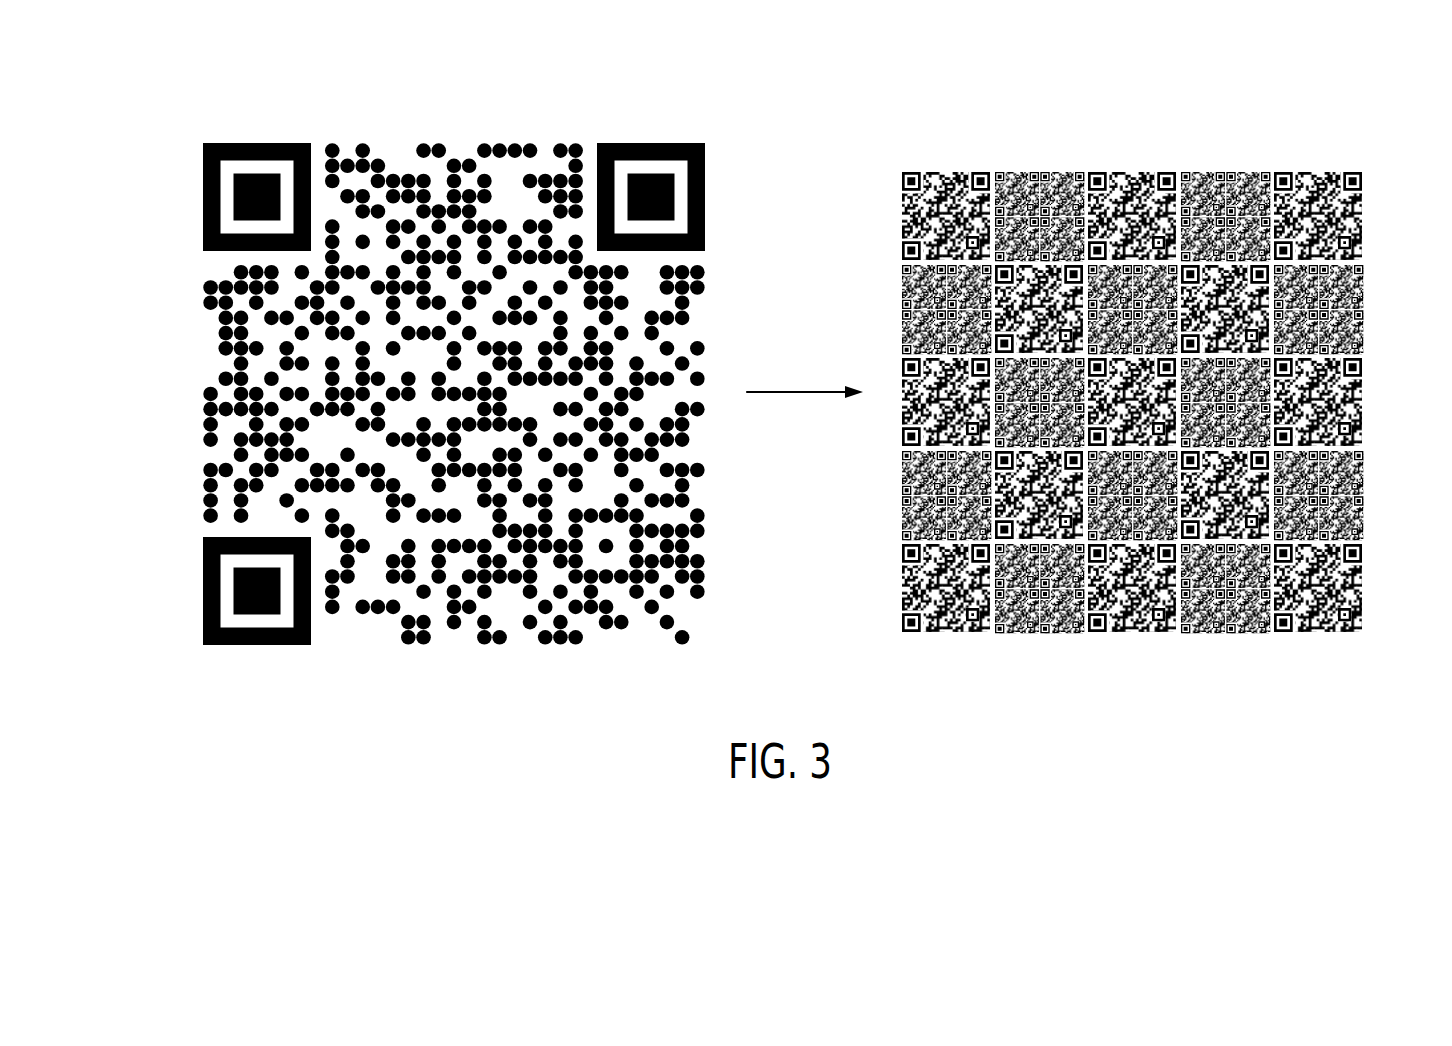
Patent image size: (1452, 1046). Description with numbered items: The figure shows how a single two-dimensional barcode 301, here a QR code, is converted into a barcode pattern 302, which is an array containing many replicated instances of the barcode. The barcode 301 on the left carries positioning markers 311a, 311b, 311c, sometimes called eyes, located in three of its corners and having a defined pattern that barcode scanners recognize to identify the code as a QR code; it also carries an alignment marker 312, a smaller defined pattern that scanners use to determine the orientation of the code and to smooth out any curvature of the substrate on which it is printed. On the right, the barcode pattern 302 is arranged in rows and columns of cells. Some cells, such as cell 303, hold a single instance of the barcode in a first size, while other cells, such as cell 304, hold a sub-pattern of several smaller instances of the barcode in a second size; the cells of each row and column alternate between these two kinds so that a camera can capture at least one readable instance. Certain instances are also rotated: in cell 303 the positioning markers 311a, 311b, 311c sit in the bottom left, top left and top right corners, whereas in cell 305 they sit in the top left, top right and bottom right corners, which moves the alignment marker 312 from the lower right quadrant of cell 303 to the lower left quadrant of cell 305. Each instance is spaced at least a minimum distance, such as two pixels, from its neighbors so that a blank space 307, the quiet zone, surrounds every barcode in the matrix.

The barcode 301 is at (298, 96).
The barcode pattern 302 is at (1039, 87).
The cell 303 is at (937, 633).
The cell 304 is at (1035, 633).
The cell 305 is at (1308, 633).
The blank space 307 is at (1270, 148).
The positioning marker 311a is at (203, 193).
The positioning marker 311b is at (203, 588).
The positioning marker 311c is at (705, 194).
The alignment marker 312 is at (605, 585).